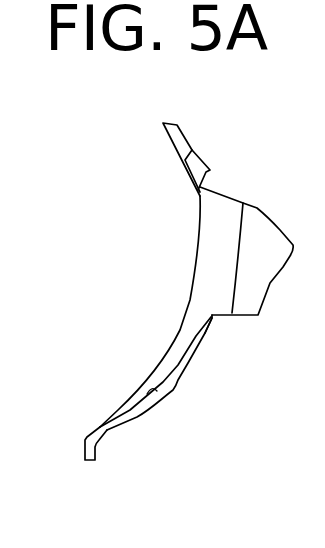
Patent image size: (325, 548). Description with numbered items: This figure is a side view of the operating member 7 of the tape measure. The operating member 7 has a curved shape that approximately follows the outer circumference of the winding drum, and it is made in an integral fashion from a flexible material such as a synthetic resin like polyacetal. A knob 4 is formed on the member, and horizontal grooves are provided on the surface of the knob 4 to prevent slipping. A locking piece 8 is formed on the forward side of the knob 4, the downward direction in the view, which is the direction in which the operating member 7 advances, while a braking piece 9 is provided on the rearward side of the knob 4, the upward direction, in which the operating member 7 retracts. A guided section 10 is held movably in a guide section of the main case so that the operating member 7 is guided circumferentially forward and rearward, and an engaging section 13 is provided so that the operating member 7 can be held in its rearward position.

The knob 4 is at (283, 267).
The operating member 7 is at (184, 275).
The locking piece 8 is at (97, 447).
The braking piece 9 is at (185, 161).
The guided section 10 is at (197, 300).
The engaging section 13 is at (208, 161).